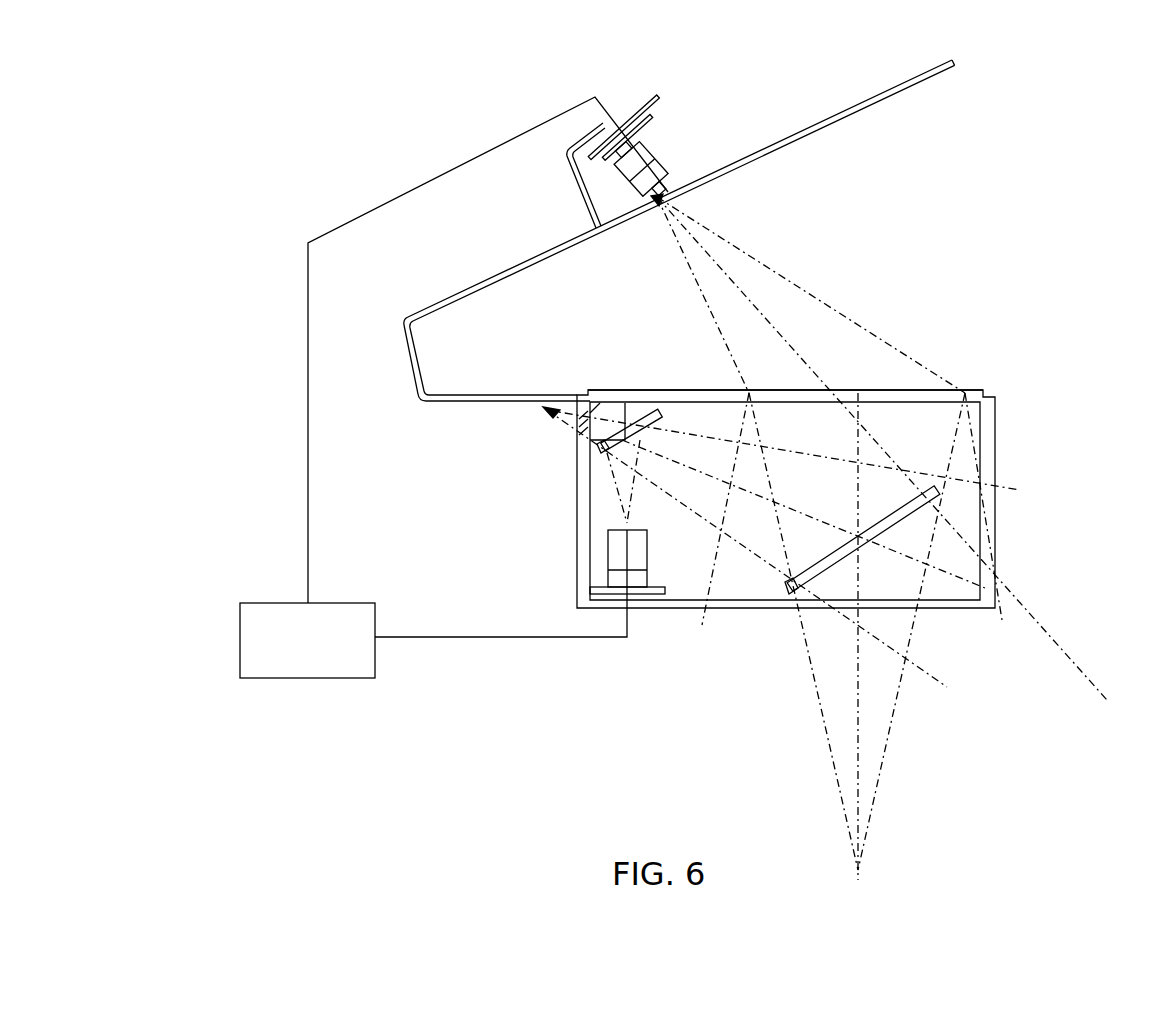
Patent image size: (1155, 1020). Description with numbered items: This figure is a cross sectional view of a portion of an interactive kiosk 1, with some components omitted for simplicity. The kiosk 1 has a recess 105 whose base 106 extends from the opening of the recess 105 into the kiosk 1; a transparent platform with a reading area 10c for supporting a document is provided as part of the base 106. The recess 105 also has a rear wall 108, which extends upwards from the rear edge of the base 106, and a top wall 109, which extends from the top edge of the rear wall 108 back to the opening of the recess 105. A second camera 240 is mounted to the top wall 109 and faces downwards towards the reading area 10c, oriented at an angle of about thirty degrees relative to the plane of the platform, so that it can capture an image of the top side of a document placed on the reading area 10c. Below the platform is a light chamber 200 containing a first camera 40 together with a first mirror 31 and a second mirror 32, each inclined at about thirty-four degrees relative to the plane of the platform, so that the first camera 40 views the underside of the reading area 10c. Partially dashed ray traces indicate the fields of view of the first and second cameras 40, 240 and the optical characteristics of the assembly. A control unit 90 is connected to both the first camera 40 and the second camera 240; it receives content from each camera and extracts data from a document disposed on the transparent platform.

The interactive kiosk 1 is at (264, 243).
The top wall 109 is at (470, 287).
The rear wall 108 is at (411, 362).
The base 106 is at (508, 402).
The second camera 240 is at (620, 185).
The recess 105 is at (928, 207).
The light chamber 200 is at (1008, 435).
The reading area 10c is at (883, 392).
The second mirror 32 is at (656, 408).
The first mirror 31 is at (943, 490).
The first camera 40 is at (615, 562).
The control unit 90 is at (322, 651).